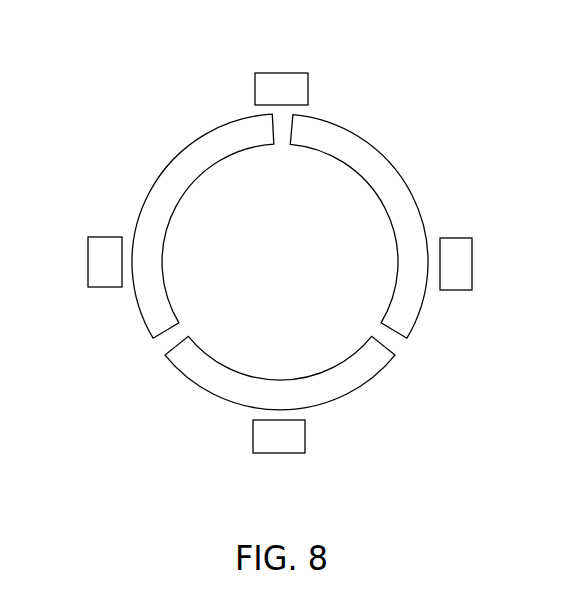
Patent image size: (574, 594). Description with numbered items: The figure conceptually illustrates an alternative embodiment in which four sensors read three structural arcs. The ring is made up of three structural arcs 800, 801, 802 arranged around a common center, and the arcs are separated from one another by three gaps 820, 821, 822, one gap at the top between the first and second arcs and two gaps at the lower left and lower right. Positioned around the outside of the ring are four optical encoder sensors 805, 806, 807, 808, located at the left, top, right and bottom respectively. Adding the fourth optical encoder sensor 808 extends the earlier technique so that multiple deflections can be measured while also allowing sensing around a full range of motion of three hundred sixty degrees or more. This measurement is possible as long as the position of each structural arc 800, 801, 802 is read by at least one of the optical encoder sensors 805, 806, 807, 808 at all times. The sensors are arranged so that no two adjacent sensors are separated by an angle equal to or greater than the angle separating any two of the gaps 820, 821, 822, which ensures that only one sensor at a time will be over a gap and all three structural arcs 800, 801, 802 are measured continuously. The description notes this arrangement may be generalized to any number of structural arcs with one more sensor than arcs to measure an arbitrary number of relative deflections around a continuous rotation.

The structural arc 800 is at (205, 136).
The structural arc 801 is at (396, 163).
The structural arc 802 is at (362, 388).
The optical encoder sensor 805 is at (88, 259).
The optical encoder sensor 806 is at (283, 72).
The optical encoder sensor 807 is at (473, 265).
The optical encoder sensor 808 is at (278, 455).
The gap 820 is at (176, 336).
The gap 821 is at (281, 136).
The gap 822 is at (382, 335).